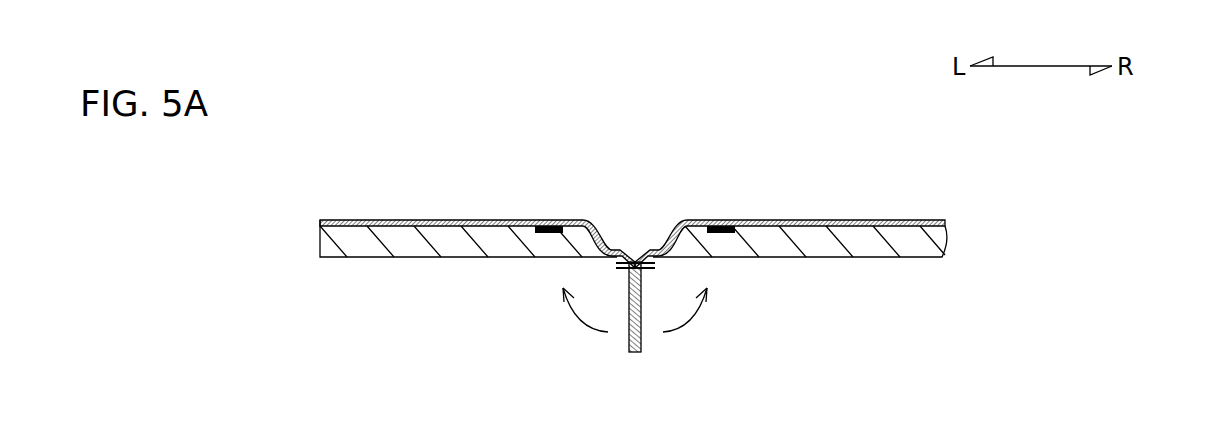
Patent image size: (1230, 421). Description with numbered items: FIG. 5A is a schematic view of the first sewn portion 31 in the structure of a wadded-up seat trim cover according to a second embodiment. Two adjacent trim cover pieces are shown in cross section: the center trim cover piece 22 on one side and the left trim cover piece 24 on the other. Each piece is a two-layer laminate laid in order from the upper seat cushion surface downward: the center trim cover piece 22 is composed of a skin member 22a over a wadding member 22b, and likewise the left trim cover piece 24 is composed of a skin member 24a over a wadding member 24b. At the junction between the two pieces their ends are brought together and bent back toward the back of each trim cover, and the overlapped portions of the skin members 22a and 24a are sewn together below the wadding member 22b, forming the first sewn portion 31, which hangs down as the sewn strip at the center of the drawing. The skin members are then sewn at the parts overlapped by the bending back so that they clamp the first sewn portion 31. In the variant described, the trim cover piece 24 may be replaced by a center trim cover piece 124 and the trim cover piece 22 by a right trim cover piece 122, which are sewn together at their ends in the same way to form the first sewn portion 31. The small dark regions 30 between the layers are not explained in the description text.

The center trim cover piece 22 is at (1084, 193).
The right trim cover piece 122 is at (902, 240).
The skin member 22a is at (947, 222).
The wadding member 22b is at (945, 247).
The left trim cover piece 24 is at (210, 193).
The center trim cover piece 124 is at (378, 240).
The skin member 24a is at (321, 222).
The wadding member 24b is at (322, 246).
The adhesive portions 30 is at (551, 222).
The first sewn portion 31 is at (649, 272).